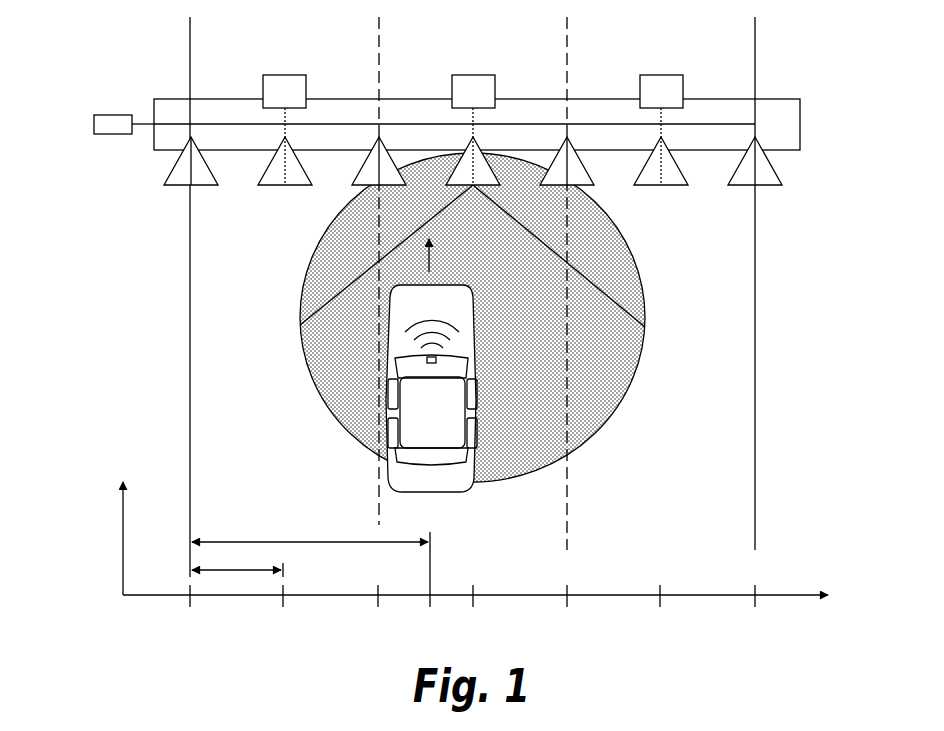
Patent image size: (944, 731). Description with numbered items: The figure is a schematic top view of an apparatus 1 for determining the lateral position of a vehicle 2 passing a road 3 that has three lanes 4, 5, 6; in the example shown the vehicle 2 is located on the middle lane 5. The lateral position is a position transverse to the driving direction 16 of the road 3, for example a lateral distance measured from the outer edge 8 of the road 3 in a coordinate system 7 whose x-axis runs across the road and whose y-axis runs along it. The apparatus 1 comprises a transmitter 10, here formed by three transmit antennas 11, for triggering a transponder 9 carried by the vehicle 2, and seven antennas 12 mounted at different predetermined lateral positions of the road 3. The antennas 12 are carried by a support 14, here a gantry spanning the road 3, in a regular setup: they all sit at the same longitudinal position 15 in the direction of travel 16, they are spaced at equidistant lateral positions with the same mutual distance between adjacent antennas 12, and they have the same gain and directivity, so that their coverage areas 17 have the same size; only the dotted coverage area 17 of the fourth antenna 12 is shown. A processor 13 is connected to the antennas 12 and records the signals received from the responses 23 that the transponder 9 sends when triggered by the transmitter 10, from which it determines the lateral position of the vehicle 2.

The apparatus 1 is at (84, 54).
The vehicle 2 is at (431, 404).
The road 3 is at (453, 283).
The lane 4 is at (277, 522).
The lane 5 is at (466, 522).
The lane 6 is at (654, 522).
The coordinate system 7 is at (120, 600).
The outer edge 8 is at (190, 378).
The transponder 9 is at (436, 366).
The transmitter 10 is at (577, 30).
The transmit antenna 11 is at (302, 92).
The antenna 12 is at (198, 172).
The processor 13 is at (112, 125).
The support 14 is at (793, 125).
The longitudinal position 15 is at (511, 175).
The driving direction 16 is at (430, 267).
The coverage area 17 is at (620, 387).
The response 23 is at (432, 333).